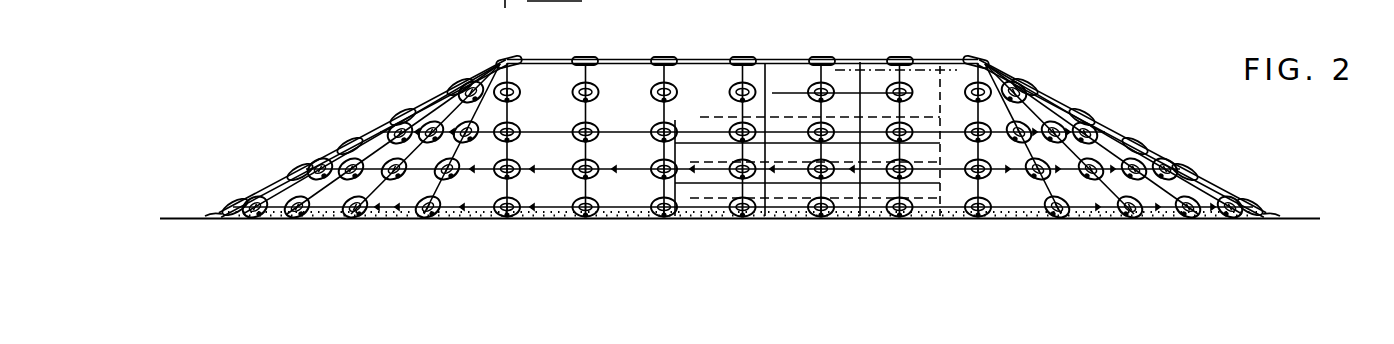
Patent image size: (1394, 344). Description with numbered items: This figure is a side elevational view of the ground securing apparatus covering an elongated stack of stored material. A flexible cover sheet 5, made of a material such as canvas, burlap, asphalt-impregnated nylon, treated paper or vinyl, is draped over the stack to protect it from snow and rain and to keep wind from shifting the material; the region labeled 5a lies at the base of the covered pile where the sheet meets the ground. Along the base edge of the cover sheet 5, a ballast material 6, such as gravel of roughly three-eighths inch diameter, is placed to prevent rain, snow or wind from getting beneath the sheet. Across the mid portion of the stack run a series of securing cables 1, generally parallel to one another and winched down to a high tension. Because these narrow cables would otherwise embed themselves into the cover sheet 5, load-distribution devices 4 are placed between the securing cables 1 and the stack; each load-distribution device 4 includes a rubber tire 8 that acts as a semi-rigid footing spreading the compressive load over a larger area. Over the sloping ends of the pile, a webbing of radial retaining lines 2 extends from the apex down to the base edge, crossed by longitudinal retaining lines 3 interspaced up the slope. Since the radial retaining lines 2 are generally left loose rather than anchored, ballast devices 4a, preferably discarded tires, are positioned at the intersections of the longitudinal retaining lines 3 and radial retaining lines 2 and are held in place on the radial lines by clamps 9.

The securing cable 1 is at (656, 111).
The radial retaining line 2 is at (433, 193).
The longitudinal retaining line 3 is at (478, 168).
The load-distribution device 4 is at (890, 55).
The ballast device 4a is at (411, 98).
The cover sheet 5 is at (630, 192).
The ground surface 5a is at (808, 19).
The ballast material 6 is at (212, 213).
The rubber tire 8 is at (338, 140).
The clamp 9 is at (287, 178).